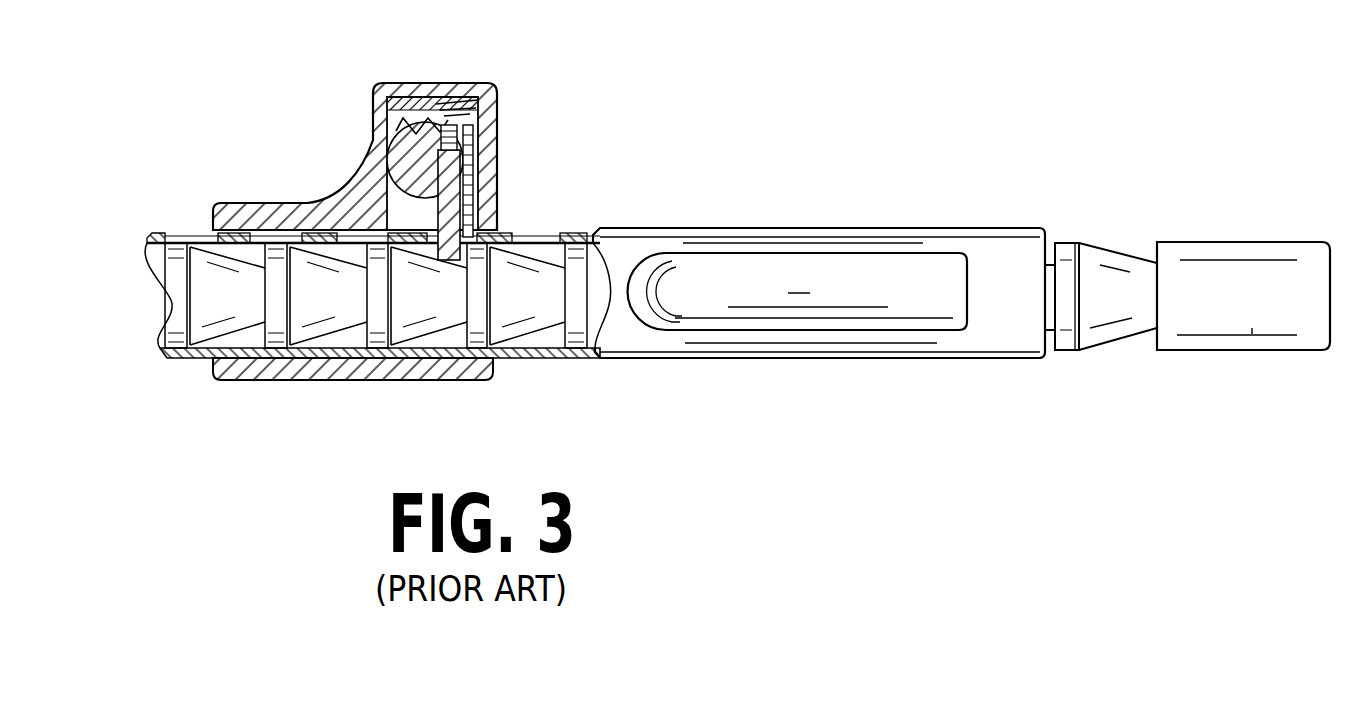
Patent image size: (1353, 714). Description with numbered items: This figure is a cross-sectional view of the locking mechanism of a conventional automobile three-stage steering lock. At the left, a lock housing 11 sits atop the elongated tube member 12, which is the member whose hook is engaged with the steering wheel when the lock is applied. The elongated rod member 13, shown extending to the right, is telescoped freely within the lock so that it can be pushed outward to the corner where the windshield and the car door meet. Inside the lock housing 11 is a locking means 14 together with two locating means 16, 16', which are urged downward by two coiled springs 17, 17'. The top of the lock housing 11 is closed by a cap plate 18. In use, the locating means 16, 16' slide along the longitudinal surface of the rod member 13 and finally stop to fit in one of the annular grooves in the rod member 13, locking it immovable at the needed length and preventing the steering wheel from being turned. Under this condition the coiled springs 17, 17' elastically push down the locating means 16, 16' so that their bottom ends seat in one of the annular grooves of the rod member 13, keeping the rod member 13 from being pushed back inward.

The lock housing 11 is at (364, 110).
The elongated tube member 12 is at (983, 359).
The elongated rod member 13 is at (1213, 351).
The locking means 14 is at (397, 153).
The locating means 16 is at (496, 192).
The locating means 16' is at (510, 181).
The coiled spring 17 is at (442, 85).
The coiled spring 17' is at (500, 95).
The cap plate 18 is at (423, 86).